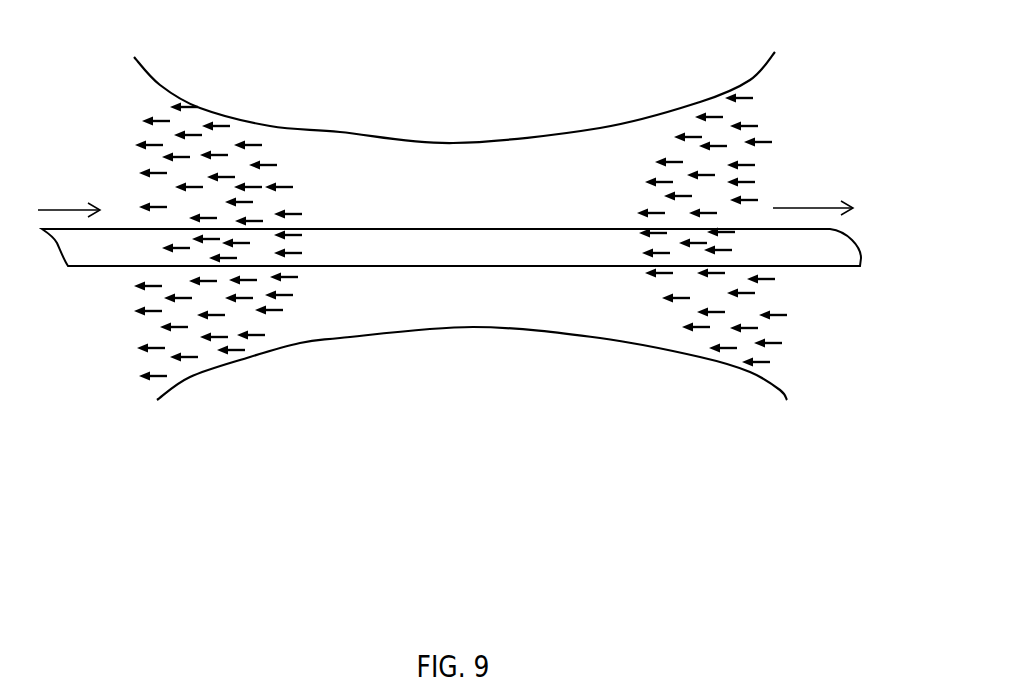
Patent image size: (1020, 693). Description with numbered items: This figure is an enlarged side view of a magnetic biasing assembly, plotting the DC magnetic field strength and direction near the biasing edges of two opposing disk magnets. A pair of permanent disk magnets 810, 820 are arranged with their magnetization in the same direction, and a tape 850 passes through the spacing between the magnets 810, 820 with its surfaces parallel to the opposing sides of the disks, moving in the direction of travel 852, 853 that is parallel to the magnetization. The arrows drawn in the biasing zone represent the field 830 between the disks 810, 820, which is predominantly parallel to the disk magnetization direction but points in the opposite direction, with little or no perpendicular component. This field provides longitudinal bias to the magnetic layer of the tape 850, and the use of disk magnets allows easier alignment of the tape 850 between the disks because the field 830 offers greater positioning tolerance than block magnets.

The permanent magnet 810 is at (447, 103).
The permanent magnet 820 is at (454, 389).
The field 830 is at (829, 92).
The tape 850 is at (87, 267).
The travel direction 852 is at (77, 209).
The travel direction 853 is at (800, 208).